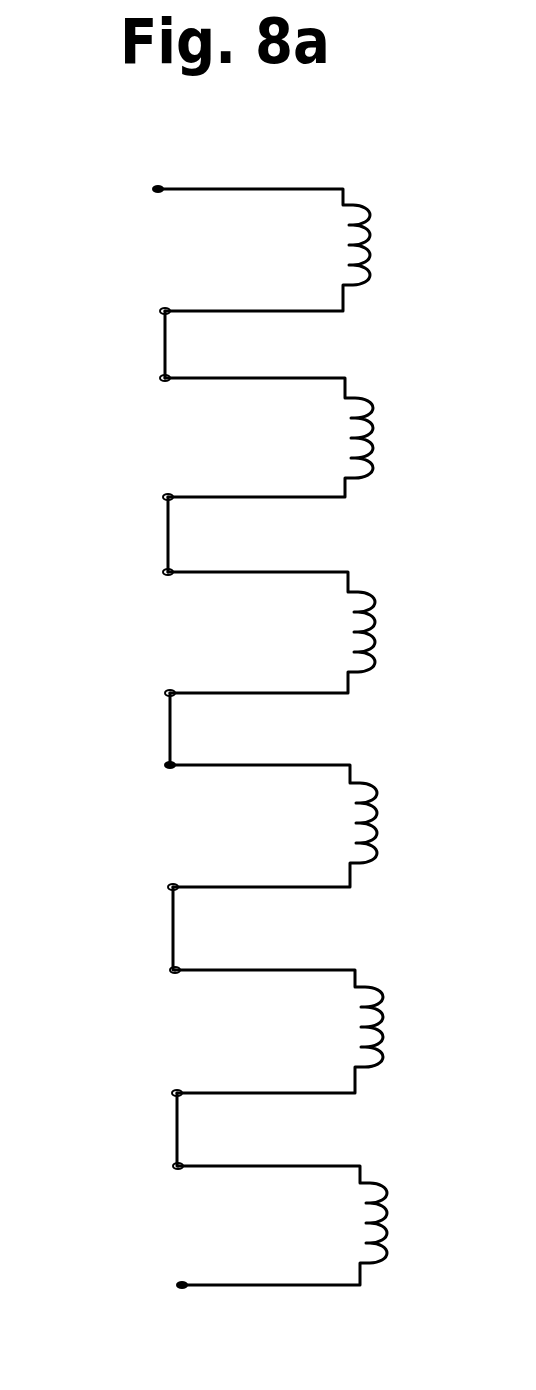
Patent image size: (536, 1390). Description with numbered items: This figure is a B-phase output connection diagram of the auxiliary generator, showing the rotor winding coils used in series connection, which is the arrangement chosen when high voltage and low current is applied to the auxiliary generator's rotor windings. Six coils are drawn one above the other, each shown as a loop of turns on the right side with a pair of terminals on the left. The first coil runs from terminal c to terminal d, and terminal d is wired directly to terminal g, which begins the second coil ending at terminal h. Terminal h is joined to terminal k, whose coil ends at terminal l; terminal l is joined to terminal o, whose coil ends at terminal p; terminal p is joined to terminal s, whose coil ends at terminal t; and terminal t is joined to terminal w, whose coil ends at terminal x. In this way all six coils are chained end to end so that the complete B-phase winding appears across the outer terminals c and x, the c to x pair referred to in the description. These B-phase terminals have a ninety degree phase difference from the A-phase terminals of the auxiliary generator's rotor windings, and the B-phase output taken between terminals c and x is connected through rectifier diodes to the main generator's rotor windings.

The terminal c is at (132, 193).
The terminal d is at (135, 316).
The terminal g is at (135, 386).
The terminal h is at (138, 511).
The terminal k is at (140, 576).
The terminal l is at (147, 689).
The terminal o is at (146, 772).
The terminal p is at (153, 892).
The terminal s is at (152, 976).
The terminal t is at (157, 1102).
The terminal w is at (154, 1171).
The terminal x is at (158, 1296).